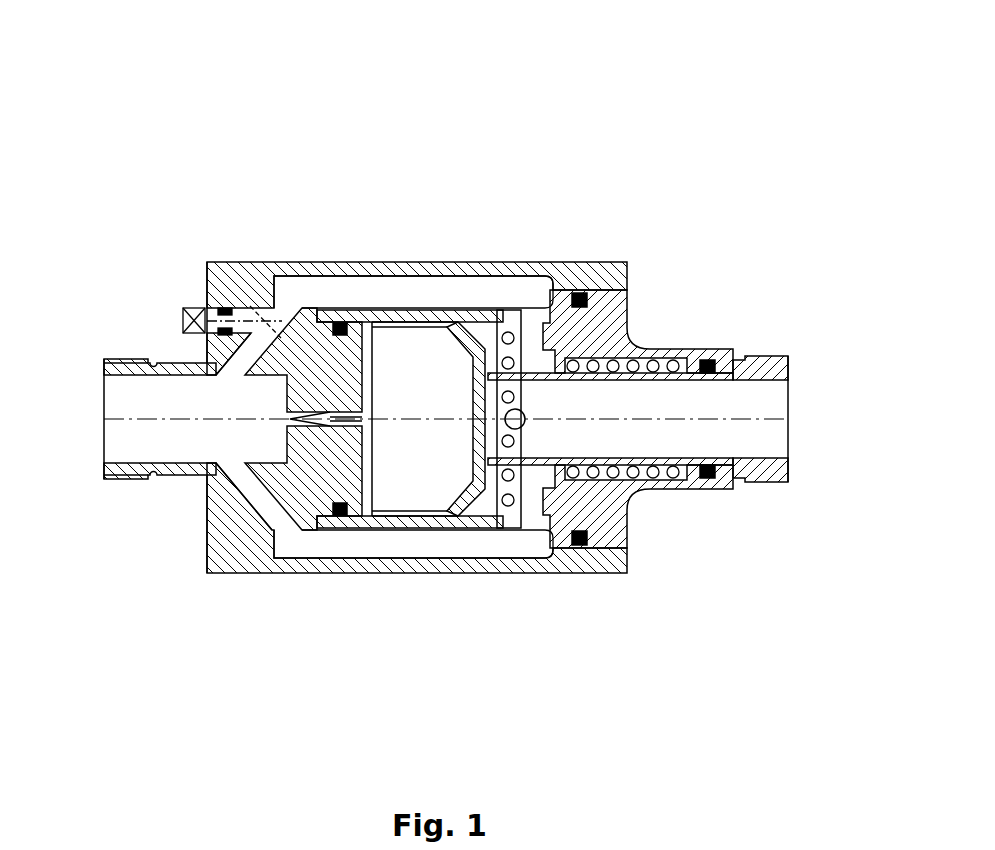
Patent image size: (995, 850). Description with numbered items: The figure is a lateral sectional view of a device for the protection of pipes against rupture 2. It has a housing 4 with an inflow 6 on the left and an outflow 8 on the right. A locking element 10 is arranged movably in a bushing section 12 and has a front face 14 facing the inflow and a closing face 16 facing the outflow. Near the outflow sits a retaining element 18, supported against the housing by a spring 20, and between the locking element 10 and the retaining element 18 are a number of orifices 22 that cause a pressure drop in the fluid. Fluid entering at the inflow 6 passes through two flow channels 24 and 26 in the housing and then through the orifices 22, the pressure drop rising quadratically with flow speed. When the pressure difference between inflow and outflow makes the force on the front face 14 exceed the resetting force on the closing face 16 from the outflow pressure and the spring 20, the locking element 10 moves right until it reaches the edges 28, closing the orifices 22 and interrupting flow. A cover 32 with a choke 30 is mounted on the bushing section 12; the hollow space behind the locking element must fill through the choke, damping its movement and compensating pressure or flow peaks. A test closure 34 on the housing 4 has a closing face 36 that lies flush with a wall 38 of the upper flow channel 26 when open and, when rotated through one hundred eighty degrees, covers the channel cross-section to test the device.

The device for the protection of pipes against rupture 2 is at (458, 108).
The housing 4 is at (258, 562).
The inflow 6 is at (82, 447).
The outflow 8 is at (822, 402).
The locking element 10 is at (505, 310).
The bushing section 12 is at (348, 310).
The front face 14 is at (388, 422).
The closing face 16 is at (512, 430).
The retaining element 18 is at (736, 356).
The spring 20 is at (634, 364).
The orifices 22 is at (514, 335).
The flow channel 24 is at (372, 543).
The flow channel 26 is at (395, 290).
The edges 28 is at (602, 328).
The choke 30 is at (292, 421).
The cover 32 is at (298, 498).
The test closure 34 is at (190, 306).
The closing face 36 is at (245, 358).
The wall 38 is at (226, 368).